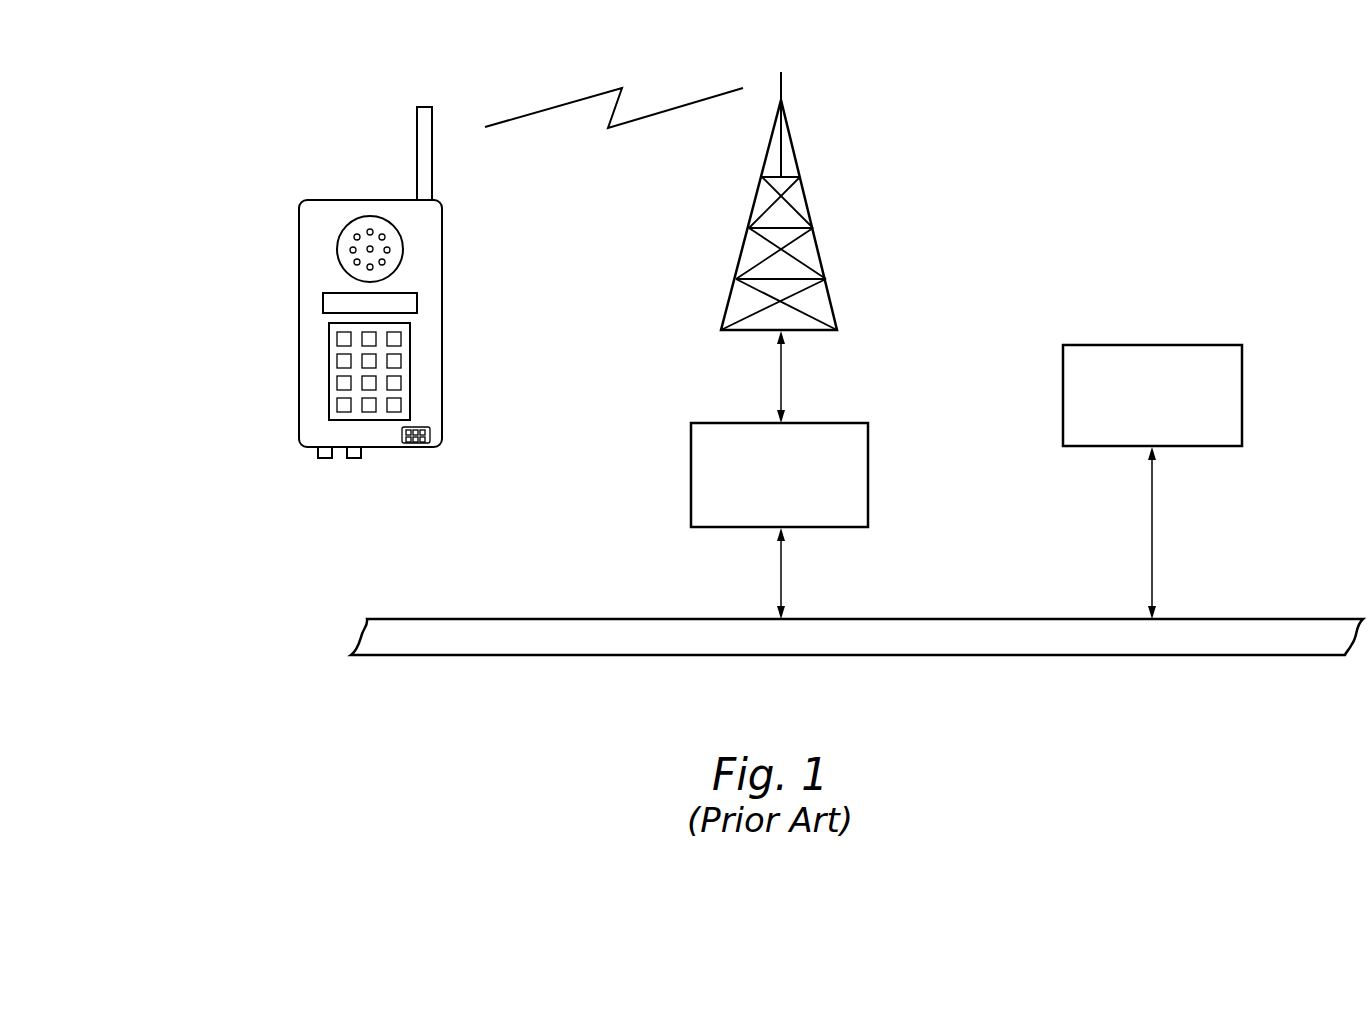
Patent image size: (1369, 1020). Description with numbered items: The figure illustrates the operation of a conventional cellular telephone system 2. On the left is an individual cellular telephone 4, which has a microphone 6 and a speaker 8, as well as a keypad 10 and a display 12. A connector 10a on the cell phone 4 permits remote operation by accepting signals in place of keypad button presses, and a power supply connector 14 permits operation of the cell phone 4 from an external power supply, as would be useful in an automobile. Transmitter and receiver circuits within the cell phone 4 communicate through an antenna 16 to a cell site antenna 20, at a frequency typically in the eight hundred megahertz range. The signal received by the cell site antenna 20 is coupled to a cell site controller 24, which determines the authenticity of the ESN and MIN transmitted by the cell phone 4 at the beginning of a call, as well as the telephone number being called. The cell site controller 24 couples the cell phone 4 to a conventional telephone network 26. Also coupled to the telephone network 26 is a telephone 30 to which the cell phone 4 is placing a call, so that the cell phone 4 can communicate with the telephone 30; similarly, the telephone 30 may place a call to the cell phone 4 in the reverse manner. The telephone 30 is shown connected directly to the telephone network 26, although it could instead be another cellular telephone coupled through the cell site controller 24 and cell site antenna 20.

The cellular telephone system 2 is at (205, 578).
The cellular telephone 4 is at (298, 429).
The microphone 6 is at (423, 445).
The speaker 8 is at (402, 255).
The keypad 10 is at (410, 367).
The connector 10a is at (325, 459).
The display 12 is at (417, 302).
The power supply connector 14 is at (353, 459).
The antenna 16 is at (417, 163).
The cell site antenna 20 is at (797, 155).
The cell site controller 24 is at (868, 483).
The telephone network 26 is at (924, 619).
The telephone 30 is at (1242, 393).